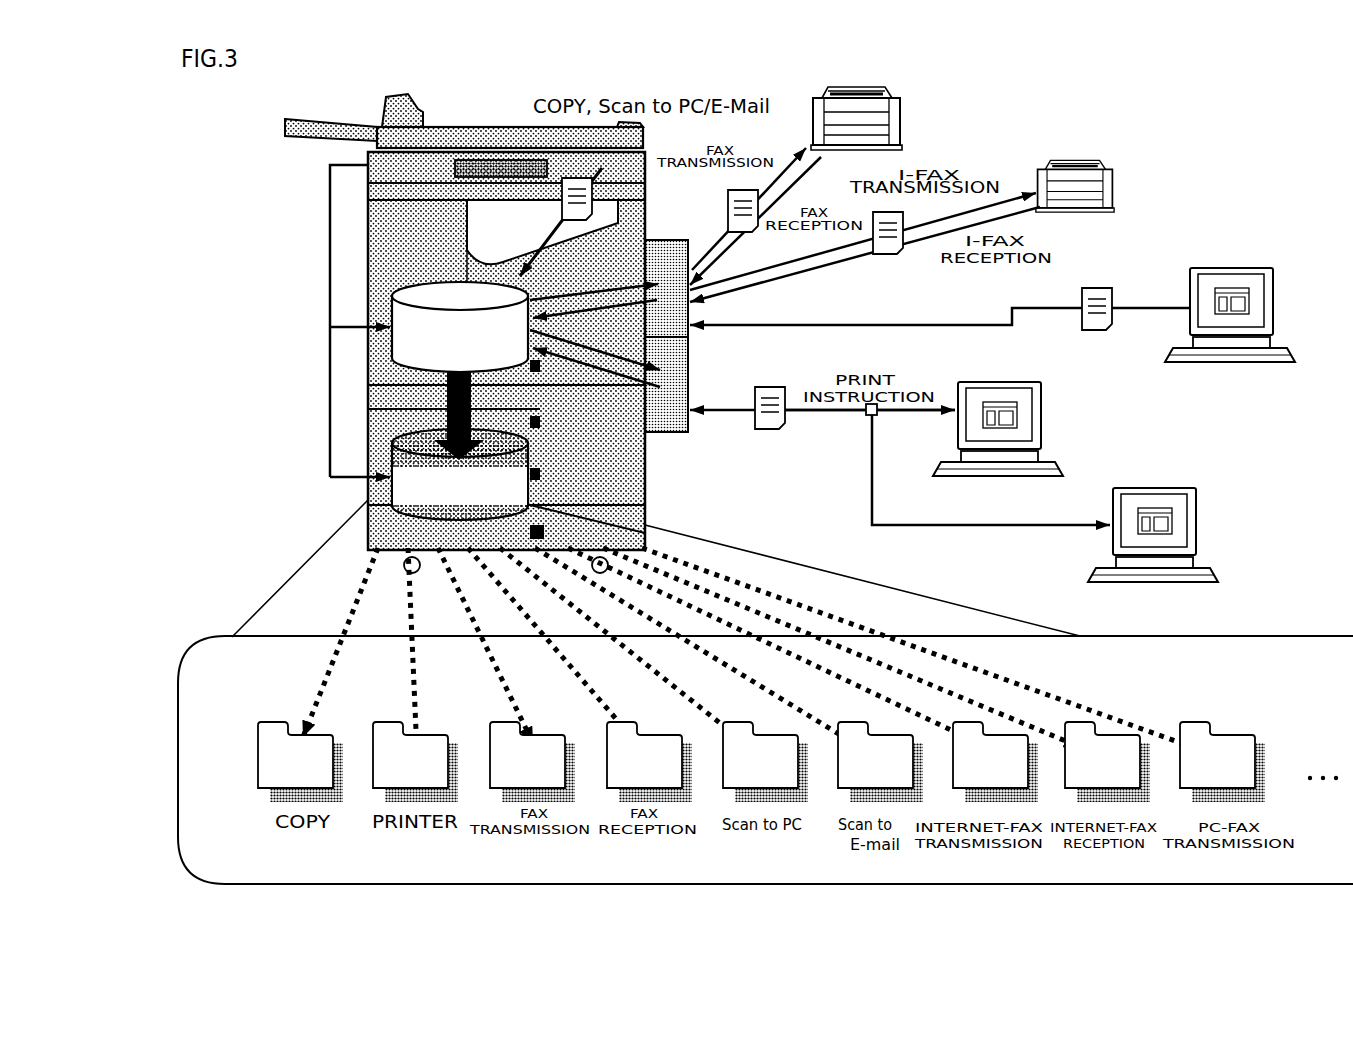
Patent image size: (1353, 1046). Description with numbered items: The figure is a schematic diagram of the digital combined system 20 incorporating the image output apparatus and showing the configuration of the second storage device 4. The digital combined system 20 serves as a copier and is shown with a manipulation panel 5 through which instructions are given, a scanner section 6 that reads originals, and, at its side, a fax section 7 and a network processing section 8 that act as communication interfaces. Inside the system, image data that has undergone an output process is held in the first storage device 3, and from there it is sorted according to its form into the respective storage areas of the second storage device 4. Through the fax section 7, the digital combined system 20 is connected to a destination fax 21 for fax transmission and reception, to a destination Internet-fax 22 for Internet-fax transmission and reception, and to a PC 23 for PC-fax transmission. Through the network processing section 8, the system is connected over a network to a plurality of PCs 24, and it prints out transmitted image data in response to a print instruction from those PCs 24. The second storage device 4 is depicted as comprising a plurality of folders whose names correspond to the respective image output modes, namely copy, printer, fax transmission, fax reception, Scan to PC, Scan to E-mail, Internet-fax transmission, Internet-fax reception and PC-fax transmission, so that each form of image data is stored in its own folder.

The first storage device 3 is at (385, 296).
The second storage device 4 is at (390, 486).
The manipulation panel 5 is at (500, 168).
The scanner section 6 is at (510, 122).
The fax section 7 is at (656, 240).
The network processing section 8 is at (654, 444).
The digital combined system 20 is at (280, 188).
The destination fax 21 is at (913, 120).
The destination Internet-fax 22 is at (1120, 190).
The PC for PC-fax transmission 23 is at (1278, 327).
The PCs 24 is at (1043, 442).